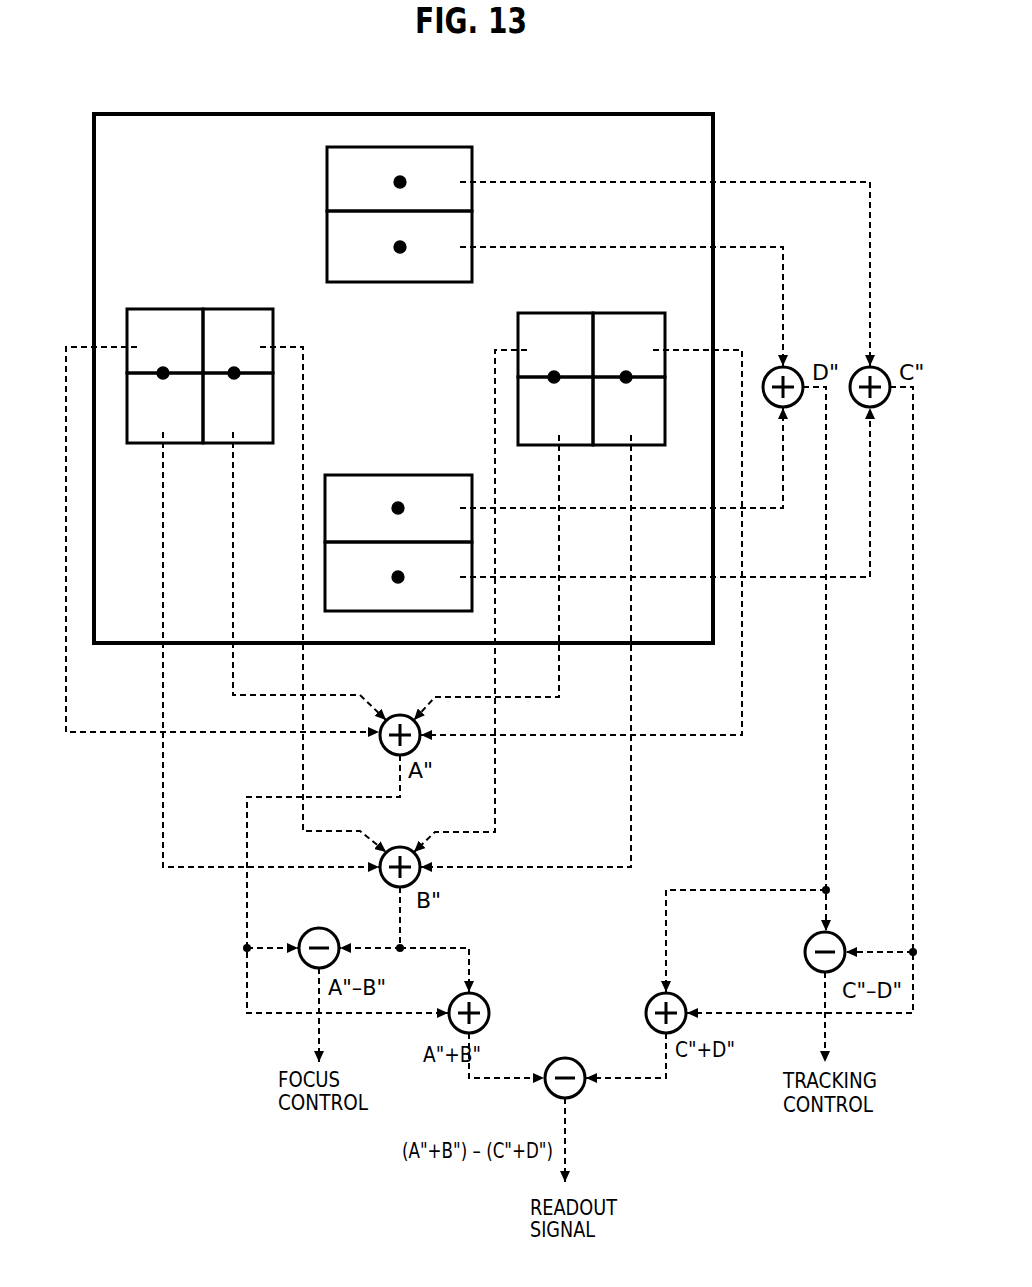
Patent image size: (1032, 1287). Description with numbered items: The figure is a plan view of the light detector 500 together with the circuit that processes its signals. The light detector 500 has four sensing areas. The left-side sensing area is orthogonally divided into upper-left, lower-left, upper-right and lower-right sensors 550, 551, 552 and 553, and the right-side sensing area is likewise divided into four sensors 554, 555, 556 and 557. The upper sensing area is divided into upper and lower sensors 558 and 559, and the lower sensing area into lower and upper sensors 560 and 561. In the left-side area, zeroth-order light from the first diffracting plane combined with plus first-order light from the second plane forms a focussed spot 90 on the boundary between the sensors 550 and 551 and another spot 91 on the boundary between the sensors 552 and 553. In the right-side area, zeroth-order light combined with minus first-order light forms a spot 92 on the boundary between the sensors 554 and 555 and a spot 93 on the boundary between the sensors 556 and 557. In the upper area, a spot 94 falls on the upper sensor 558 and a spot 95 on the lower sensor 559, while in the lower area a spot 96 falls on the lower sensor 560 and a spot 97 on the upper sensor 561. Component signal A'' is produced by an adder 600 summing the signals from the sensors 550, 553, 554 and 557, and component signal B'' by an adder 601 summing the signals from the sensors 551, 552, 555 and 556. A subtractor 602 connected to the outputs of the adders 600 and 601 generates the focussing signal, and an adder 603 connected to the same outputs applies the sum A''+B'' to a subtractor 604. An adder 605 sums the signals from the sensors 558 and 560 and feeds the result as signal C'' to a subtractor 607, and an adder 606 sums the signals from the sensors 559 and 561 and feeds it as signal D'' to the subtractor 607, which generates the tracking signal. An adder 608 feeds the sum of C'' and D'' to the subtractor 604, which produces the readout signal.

The light detector 500 is at (392, 114).
The upper sensor 558 is at (468, 170).
The lower sensor 559 is at (468, 235).
The focussed spot 94 is at (406, 182).
The focussed spot 95 is at (406, 247).
The upper-left sensor 550 is at (160, 312).
The upper-right sensor 552 is at (235, 312).
The lower-left sensor 551 is at (145, 435).
The lower-right sensor 553 is at (247, 435).
The focussed spot 90 is at (163, 367).
The focussed spot 91 is at (234, 367).
The sensor 556 is at (557, 316).
The sensor 554 is at (628, 316).
The sensor 557 is at (540, 447).
The sensor 555 is at (650, 440).
The focussed spot 93 is at (554, 371).
The focussed spot 92 is at (626, 371).
The upper sensor 561 is at (437, 480).
The lower sensor 560 is at (458, 592).
The focussed spot 97 is at (404, 508).
The focussed spot 96 is at (404, 577).
The adder 600 is at (392, 716).
The adder 601 is at (392, 848).
The subtractor 602 is at (326, 922).
The adder 603 is at (481, 998).
The subtractor 604 is at (568, 1059).
The adder 605 is at (882, 368).
The adder 606 is at (795, 368).
The subtractor 607 is at (839, 937).
The adder 608 is at (681, 1000).